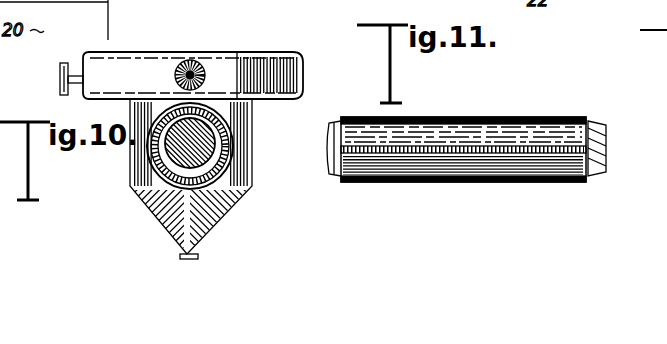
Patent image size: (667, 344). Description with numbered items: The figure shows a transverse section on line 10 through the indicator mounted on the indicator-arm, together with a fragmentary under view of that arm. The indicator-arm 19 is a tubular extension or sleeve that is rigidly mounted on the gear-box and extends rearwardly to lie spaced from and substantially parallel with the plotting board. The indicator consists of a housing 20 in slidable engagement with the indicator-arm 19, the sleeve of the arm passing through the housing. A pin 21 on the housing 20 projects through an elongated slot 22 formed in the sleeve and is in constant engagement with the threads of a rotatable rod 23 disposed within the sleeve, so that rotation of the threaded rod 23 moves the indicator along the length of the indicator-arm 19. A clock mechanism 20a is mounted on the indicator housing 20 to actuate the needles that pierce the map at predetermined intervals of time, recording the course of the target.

In FIG. 10, the section line 10 is at (148, 20).
In FIG. 10, the indicator-arm 19 is at (222, 170).
In FIG. 11, the indicator-arm 19 is at (572, 118).
In FIG. 10, the indicator housing 20 is at (250, 116).
In FIG. 10, the clock mechanism 20a is at (251, 52).
In FIG. 10, the pin 21 is at (232, 156).
In FIG. 11, the elongated slot 22 is at (492, 143).
In FIG. 10, the threaded rod 23 is at (172, 148).
In FIG. 11, the threaded rod 23 is at (601, 135).